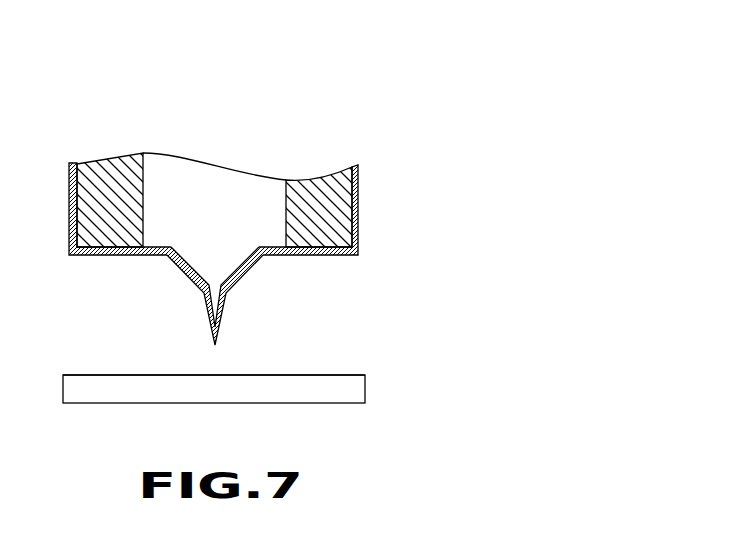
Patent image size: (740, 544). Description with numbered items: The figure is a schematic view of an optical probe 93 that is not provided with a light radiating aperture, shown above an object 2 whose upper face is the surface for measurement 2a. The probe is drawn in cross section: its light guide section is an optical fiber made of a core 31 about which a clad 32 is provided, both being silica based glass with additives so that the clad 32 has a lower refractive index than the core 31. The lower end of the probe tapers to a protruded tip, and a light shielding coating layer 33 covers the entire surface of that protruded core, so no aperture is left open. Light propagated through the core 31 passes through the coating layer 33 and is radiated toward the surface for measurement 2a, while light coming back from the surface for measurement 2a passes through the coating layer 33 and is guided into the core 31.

The dispenser 93 is at (398, 128).
The container 33 is at (358, 208).
The clad 32 is at (313, 180).
The core 31 is at (234, 252).
The substrate 2 is at (340, 392).
The surface for measurement 2a is at (323, 375).